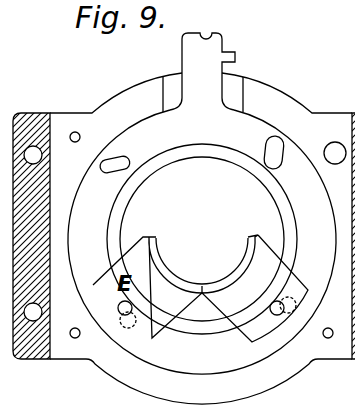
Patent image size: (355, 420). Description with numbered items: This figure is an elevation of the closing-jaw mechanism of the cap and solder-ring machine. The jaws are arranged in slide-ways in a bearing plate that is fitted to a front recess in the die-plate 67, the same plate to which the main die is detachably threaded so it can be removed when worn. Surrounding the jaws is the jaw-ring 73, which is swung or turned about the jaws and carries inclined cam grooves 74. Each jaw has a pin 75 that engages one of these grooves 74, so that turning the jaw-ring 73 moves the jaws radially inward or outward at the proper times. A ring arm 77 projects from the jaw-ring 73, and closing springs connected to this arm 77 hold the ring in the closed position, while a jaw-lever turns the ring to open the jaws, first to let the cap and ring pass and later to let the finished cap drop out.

The die-plate 67 is at (123, 362).
The ring arm 77 is at (203, 82).
The jaw-ring 73 is at (248, 142).
The cam groove 74 is at (117, 168).
The pin 75 is at (127, 308).